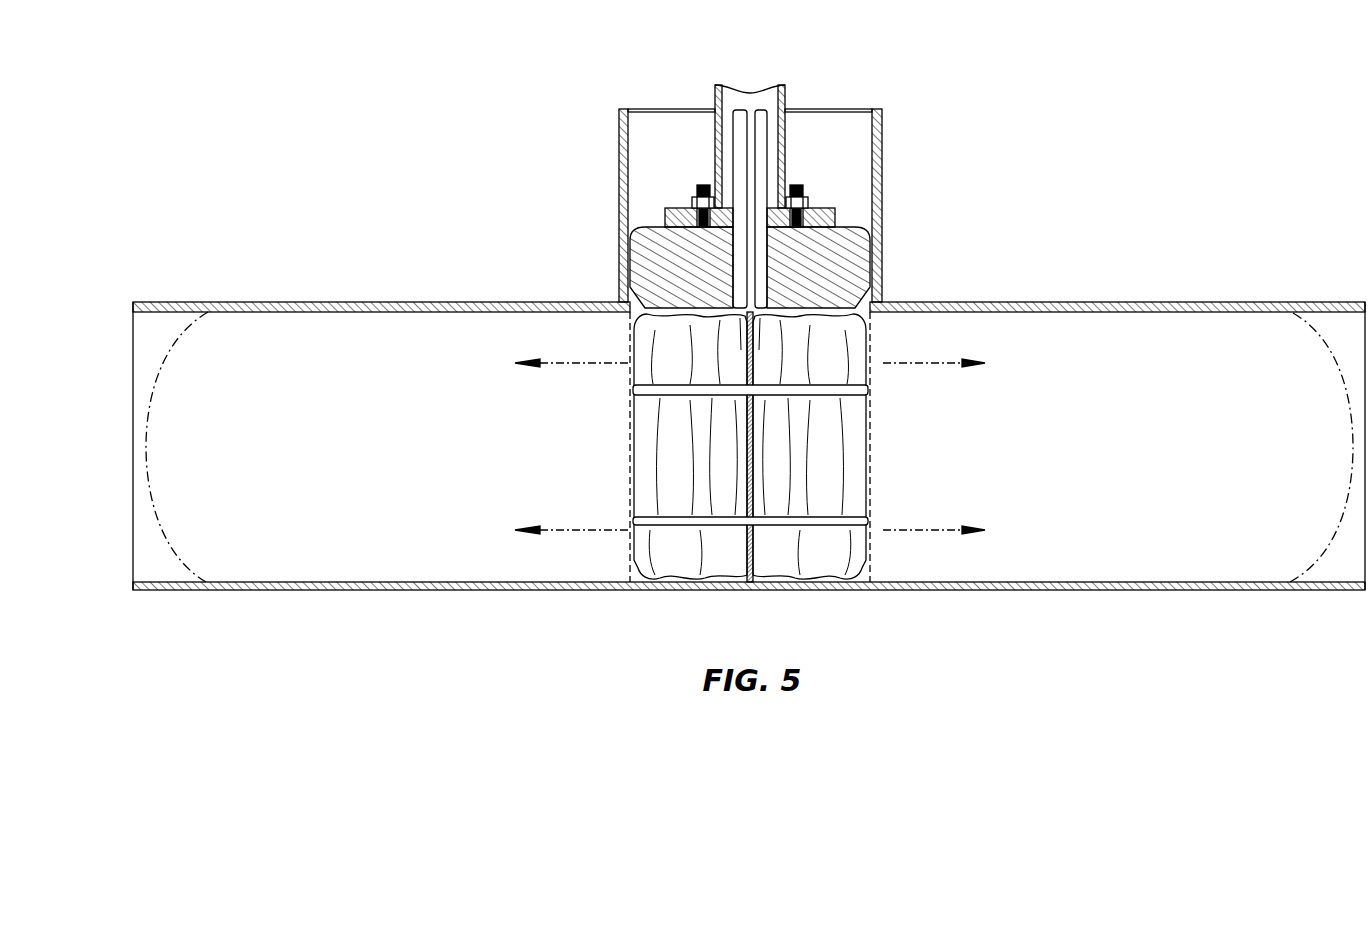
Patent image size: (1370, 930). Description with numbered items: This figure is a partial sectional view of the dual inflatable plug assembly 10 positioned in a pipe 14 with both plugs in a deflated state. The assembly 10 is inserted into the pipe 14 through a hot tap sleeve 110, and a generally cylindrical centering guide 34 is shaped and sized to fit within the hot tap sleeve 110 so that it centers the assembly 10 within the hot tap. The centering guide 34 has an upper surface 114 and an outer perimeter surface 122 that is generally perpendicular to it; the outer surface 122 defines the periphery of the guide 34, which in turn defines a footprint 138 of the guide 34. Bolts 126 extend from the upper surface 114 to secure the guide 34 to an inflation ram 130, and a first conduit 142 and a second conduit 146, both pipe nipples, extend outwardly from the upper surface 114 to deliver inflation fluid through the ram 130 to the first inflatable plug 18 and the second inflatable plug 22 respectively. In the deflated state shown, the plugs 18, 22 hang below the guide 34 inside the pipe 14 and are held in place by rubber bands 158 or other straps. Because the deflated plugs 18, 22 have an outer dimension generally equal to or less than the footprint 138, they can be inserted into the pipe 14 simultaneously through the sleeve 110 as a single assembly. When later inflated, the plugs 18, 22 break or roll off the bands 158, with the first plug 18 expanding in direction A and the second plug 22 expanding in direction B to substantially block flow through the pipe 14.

The dual inflatable plug assembly 10 is at (1012, 154).
The pipe 14 is at (1328, 302).
The first inflatable plug 18 is at (645, 566).
The second inflatable plug 22 is at (855, 566).
The centering guide 34 is at (760, 189).
The hot tap sleeve 110 is at (883, 140).
The upper surface 114 is at (845, 224).
The outer perimeter surface 122 is at (874, 266).
The bolts 126 is at (704, 184).
The inflation ram 130 is at (786, 138).
The footprint 138 is at (627, 398).
The first conduit 142 is at (738, 116).
The second conduit 146 is at (762, 116).
The rubber bands 158 is at (672, 384).